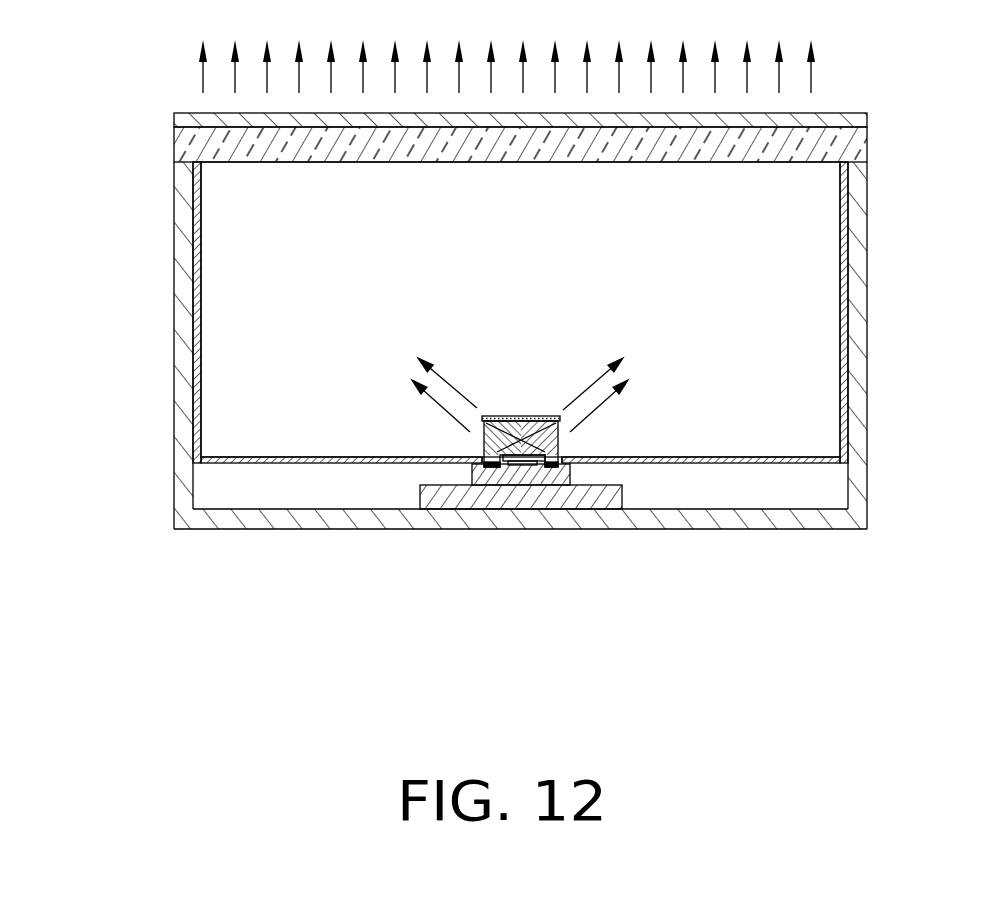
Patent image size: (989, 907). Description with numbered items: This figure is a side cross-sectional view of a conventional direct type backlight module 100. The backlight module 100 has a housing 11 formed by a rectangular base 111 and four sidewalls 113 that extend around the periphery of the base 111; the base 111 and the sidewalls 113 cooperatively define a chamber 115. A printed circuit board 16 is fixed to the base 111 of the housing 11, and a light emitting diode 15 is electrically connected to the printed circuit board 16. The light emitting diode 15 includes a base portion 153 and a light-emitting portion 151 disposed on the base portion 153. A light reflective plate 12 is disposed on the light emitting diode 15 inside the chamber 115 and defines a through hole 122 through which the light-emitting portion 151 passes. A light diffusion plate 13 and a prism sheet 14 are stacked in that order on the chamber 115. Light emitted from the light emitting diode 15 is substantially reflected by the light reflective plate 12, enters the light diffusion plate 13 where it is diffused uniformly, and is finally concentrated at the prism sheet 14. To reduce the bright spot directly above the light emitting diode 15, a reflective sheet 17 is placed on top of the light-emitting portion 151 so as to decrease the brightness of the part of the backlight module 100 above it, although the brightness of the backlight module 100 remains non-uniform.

The backlight module 100 is at (140, 68).
The housing 11 is at (457, 367).
The base 111 is at (230, 520).
The sidewalls 113 is at (183, 472).
The chamber 115 is at (819, 232).
The light reflective plate 12 is at (760, 458).
The through holes 122 is at (557, 455).
The light diffusion plate 13 is at (858, 142).
The prism sheet 14 is at (828, 119).
The light emitting diode 15 is at (451, 507).
The light-emitting portion 151 is at (483, 435).
The base portion 153 is at (510, 472).
The printed circuit board 16 is at (620, 492).
The reflective sheet 17 is at (517, 415).